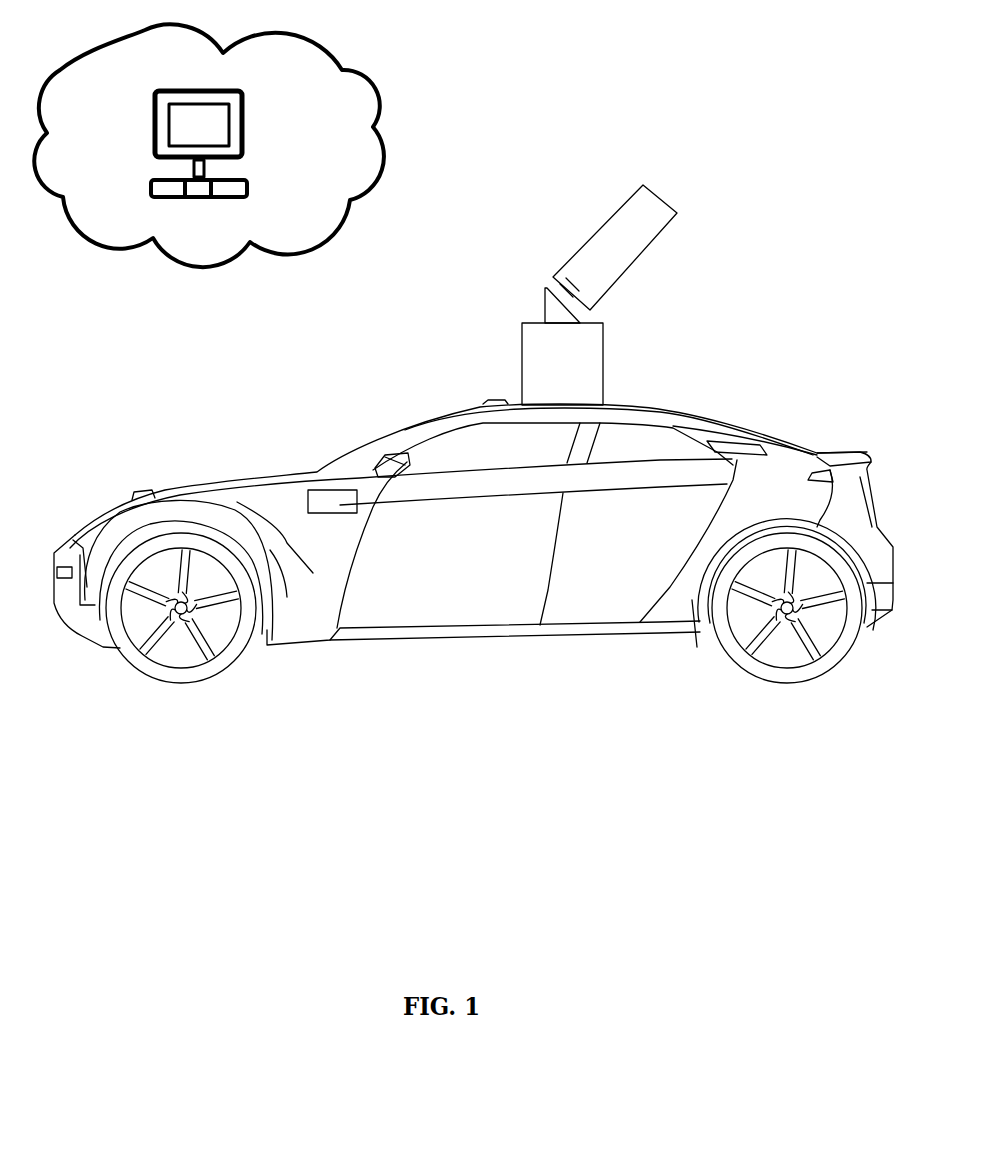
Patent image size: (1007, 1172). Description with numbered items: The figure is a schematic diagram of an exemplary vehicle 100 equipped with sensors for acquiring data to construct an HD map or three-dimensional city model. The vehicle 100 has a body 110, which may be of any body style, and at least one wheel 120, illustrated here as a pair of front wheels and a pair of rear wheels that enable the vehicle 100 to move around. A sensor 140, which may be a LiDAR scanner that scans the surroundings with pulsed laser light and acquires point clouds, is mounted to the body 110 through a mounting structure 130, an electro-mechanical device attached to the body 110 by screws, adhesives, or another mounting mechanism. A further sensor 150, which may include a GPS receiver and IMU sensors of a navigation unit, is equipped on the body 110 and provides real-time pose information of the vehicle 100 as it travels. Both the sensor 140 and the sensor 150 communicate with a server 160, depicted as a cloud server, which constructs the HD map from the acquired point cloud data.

The vehicle 100 is at (516, 758).
The body 110 is at (433, 395).
The wheel 120 is at (901, 624).
The mounting structure 130 is at (607, 364).
The sensor 140 is at (566, 236).
The sensor 150 is at (322, 483).
The server 160 is at (284, 126).